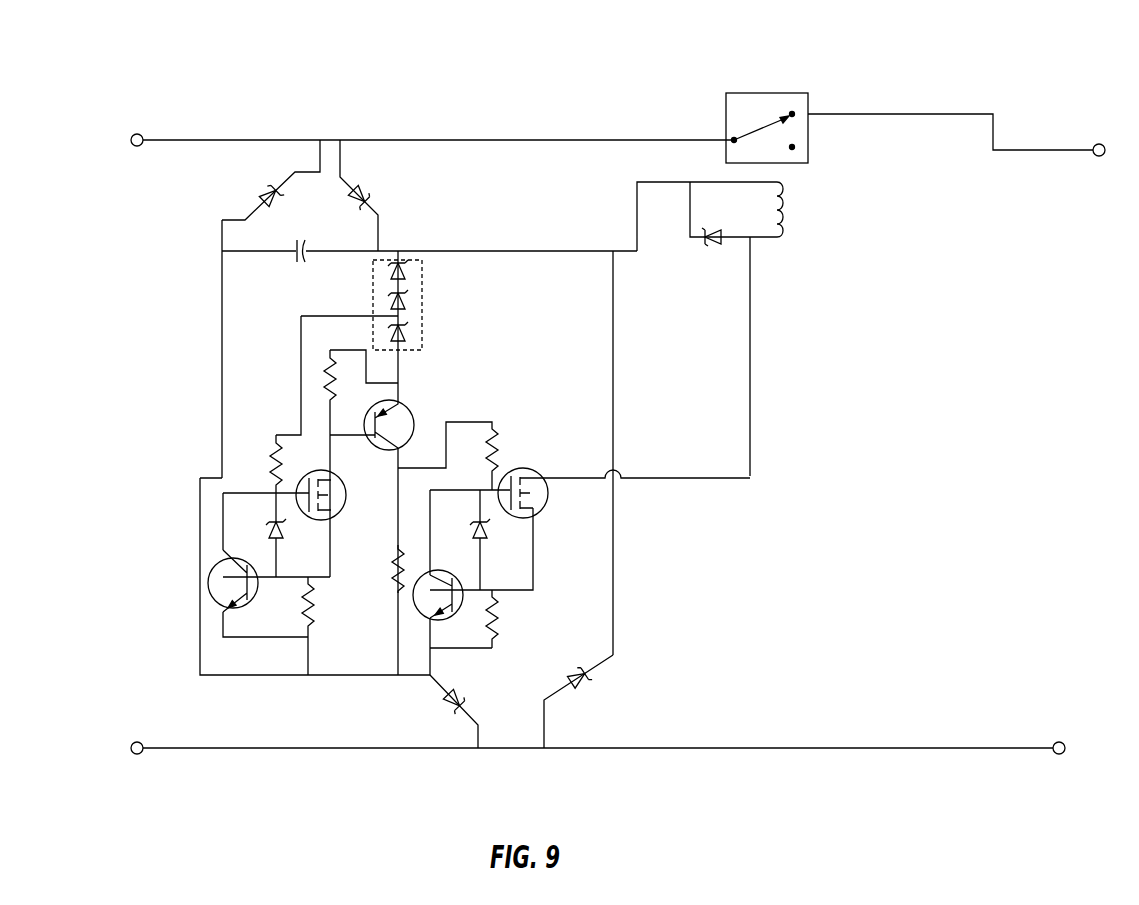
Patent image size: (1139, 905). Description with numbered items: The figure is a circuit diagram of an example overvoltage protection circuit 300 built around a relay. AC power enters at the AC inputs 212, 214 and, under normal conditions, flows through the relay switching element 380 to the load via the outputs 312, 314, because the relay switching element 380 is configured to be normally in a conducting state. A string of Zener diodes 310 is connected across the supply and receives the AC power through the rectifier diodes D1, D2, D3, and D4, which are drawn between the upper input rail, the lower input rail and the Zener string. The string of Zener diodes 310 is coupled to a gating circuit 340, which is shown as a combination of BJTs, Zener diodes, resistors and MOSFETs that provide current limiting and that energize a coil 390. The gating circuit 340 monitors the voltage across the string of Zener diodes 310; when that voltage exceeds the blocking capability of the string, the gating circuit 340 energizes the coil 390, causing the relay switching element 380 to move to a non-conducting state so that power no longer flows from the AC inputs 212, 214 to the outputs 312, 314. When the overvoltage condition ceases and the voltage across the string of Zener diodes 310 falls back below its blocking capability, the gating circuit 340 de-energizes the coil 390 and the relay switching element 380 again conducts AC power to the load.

The overvoltage protection circuit 300 is at (582, 105).
The AC input 212 is at (198, 142).
The AC input 214 is at (200, 750).
The output 312 is at (1055, 152).
The output 314 is at (983, 750).
The relay switching element 380 is at (792, 93).
The coil 390 is at (780, 208).
The string of Zener diodes 310 is at (422, 300).
The gating circuit 340 is at (525, 395).
The rectifier diode D1 is at (370, 195).
The rectifier diode D2 is at (439, 711).
The rectifier diode D3 is at (271, 180).
The rectifier diode D4 is at (581, 701).